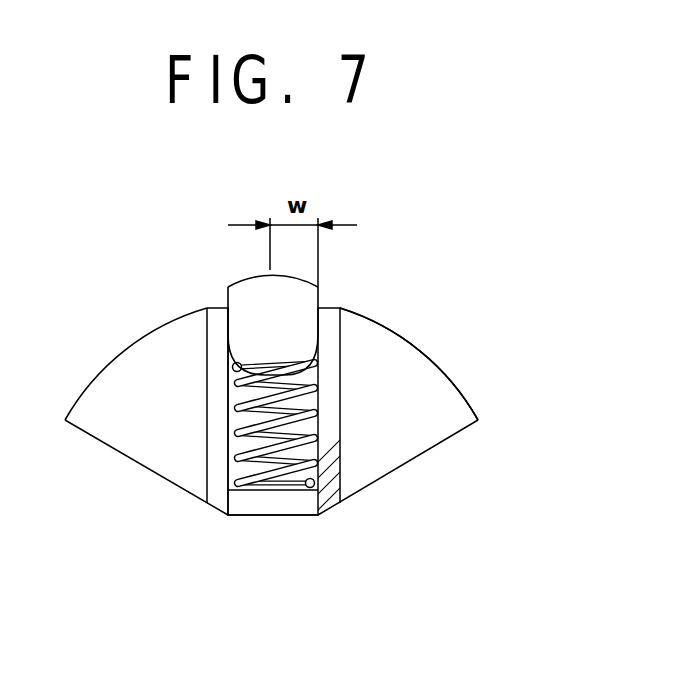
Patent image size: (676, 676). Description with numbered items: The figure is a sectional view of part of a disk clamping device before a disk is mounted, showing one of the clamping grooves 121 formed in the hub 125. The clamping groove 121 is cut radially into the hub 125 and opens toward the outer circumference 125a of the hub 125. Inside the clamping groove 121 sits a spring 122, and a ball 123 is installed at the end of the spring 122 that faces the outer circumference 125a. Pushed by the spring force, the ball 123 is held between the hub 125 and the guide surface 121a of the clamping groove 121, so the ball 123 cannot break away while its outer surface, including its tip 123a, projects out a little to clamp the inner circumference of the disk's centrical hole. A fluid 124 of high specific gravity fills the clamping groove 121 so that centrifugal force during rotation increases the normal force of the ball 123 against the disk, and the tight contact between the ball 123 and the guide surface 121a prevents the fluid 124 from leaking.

The clamping groove 121 is at (222, 537).
The guide surface 121a is at (228, 355).
The spring 122 is at (292, 470).
The ball 123 is at (302, 330).
The rounded tip of pin 123a is at (228, 287).
The fluid 124 is at (312, 452).
The hub 125 is at (425, 428).
The outer circumference of the hub 125a is at (417, 350).